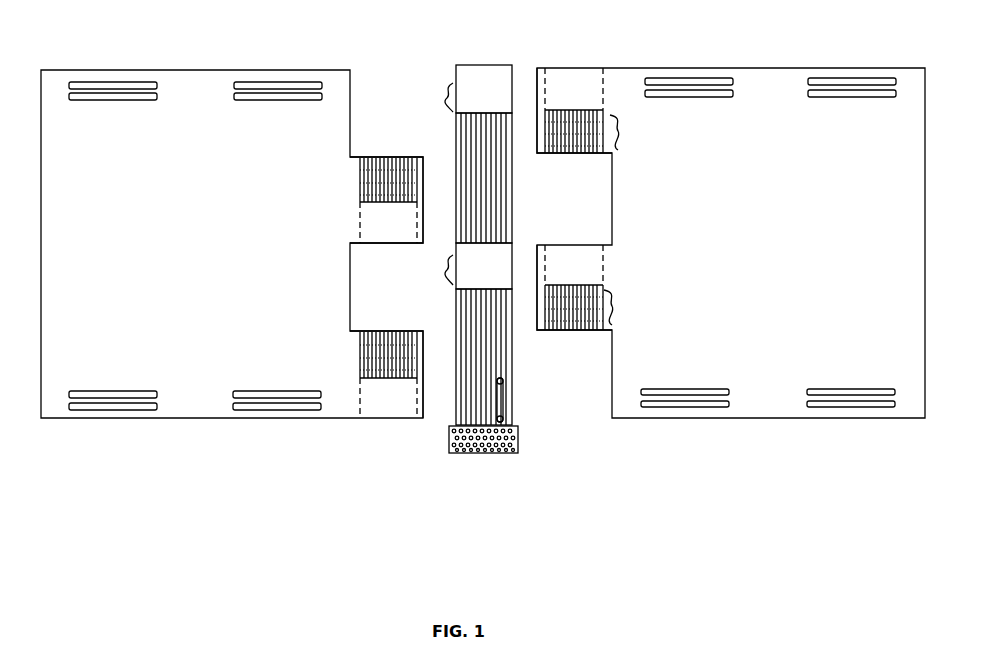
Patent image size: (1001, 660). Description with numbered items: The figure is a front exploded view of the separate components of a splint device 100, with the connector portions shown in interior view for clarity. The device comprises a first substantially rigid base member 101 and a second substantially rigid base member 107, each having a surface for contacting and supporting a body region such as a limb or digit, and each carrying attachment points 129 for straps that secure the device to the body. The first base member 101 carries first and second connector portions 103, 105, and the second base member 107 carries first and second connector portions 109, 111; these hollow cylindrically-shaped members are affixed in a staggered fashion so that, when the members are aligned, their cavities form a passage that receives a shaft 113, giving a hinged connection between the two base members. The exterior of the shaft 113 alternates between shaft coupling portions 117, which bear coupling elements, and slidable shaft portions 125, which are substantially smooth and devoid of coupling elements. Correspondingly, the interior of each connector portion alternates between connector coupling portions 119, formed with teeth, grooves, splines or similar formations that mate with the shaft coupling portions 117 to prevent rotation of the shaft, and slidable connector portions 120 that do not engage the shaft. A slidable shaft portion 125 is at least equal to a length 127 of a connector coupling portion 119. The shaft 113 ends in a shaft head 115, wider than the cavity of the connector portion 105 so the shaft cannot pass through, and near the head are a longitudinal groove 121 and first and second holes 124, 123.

The splint device 100 is at (290, 515).
The first substantially rigid base member 101 is at (195, 420).
The first connector portion 103 is at (430, 180).
The second connector portion 105 is at (425, 393).
The second substantially rigid base member 107 is at (728, 418).
The first connector portion 109 is at (537, 92).
The second connector portion 111 is at (537, 310).
The shaft 113 is at (468, 65).
The shaft head 115 is at (493, 453).
The shaft coupling portion 117 is at (493, 195).
The connector coupling portion 119 is at (363, 175).
The slidable connector portion 120 is at (357, 226).
The longitudinal groove 121 is at (507, 398).
The second hole 123 is at (507, 380).
The first hole 124 is at (505, 420).
The slidable shaft portion 125 is at (462, 186).
The length of the connector coupling portion 127 is at (640, 220).
The attachment point 129 is at (70, 407).